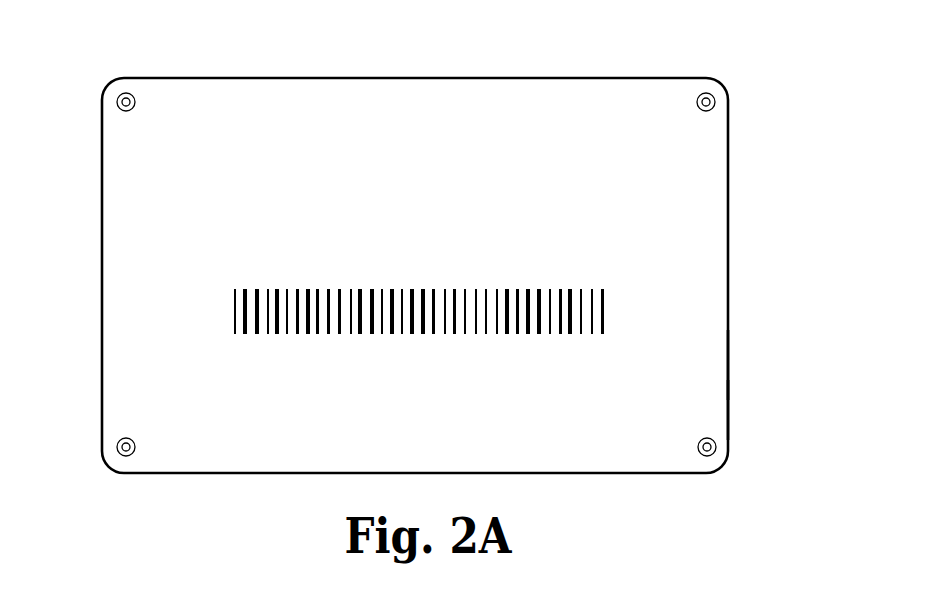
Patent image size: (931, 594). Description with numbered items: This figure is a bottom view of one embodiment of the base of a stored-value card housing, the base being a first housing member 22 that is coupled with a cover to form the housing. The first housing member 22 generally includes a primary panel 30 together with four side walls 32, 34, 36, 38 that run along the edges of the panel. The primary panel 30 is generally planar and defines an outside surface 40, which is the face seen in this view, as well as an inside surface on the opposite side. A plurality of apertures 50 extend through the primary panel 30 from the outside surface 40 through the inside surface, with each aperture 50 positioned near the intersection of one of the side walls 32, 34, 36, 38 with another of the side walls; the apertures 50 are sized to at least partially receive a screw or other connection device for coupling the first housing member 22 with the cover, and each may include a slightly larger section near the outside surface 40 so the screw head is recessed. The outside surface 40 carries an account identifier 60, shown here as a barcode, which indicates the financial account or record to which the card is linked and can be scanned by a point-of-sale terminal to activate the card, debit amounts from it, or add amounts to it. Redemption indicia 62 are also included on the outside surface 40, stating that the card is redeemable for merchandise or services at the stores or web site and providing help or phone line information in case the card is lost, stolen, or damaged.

The first housing member 22 is at (726, 70).
The primary panel 30 is at (707, 406).
The side wall 32 is at (279, 77).
The side wall 34 is at (101, 258).
The side wall 36 is at (620, 475).
The side wall 38 is at (730, 247).
The outside surface 40 is at (690, 365).
The aperture 50 is at (117, 104).
The account identifier 60 is at (616, 311).
The redemption indicia 62 is at (639, 197).